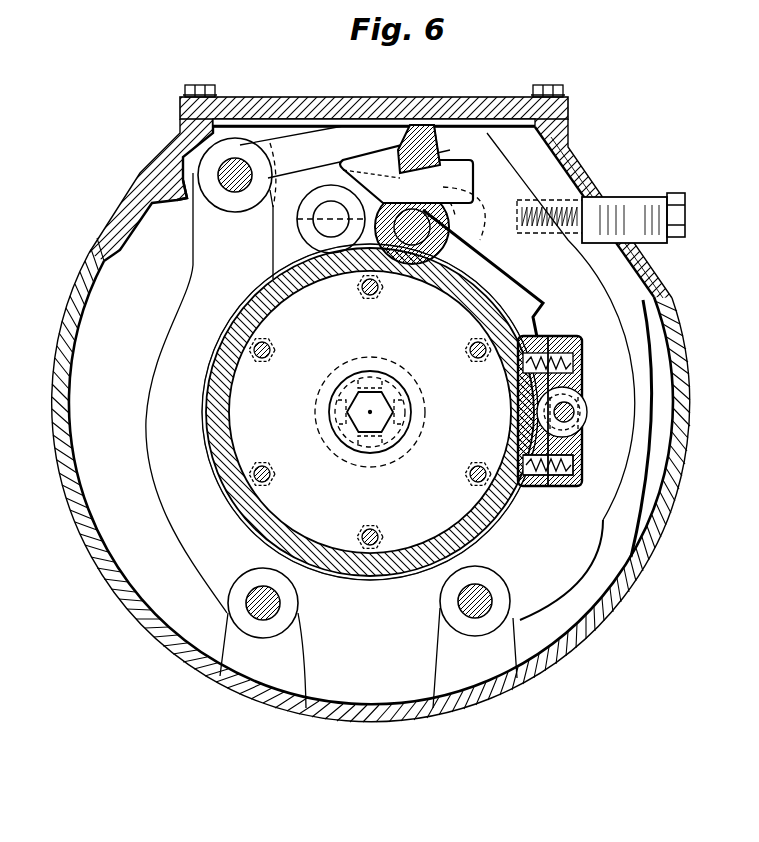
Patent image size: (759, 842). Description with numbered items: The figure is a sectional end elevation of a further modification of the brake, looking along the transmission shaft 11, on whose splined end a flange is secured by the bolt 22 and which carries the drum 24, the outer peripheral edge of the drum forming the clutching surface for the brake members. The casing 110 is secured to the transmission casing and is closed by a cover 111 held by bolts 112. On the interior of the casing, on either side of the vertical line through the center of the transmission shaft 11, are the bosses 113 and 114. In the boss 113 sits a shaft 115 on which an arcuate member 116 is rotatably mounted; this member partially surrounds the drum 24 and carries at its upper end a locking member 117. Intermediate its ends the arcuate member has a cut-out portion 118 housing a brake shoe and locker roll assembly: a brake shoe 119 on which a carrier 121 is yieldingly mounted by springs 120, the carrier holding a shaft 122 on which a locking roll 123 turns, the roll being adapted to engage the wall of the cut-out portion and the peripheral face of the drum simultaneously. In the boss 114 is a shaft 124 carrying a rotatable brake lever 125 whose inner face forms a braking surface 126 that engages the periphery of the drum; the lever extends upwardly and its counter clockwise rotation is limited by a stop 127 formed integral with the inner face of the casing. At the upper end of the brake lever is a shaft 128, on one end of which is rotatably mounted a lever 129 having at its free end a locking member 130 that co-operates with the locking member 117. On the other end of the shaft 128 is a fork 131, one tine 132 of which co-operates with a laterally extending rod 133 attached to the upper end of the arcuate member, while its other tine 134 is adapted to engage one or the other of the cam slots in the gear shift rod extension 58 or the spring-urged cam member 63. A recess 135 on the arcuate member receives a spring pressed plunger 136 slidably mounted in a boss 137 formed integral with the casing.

The transmission shaft 11 is at (345, 430).
The bolt 22 is at (374, 404).
The drum 24 is at (212, 438).
The extension 58 is at (326, 232).
The cam member 63 is at (437, 247).
The casing 110 is at (686, 372).
The cover 111 is at (363, 104).
The bolts 112 is at (205, 84).
The boss 113 is at (492, 667).
The boss 114 is at (237, 663).
The shaft 115 is at (465, 613).
The arcuate member 116 is at (592, 540).
The locking member 117 is at (437, 153).
The cut-out portion 118 is at (582, 345).
The brake shoe 119 is at (575, 450).
The springs 120 is at (572, 362).
The carrier 121 is at (580, 443).
The shaft 122 is at (575, 407).
The locking roll 123 is at (587, 414).
The shaft 124 is at (261, 620).
The brake lever 125 is at (180, 513).
The braking surface 126 is at (204, 408).
The stop 127 is at (177, 200).
The shaft 128 is at (237, 165).
The lever 129 is at (286, 193).
The locking member 130 is at (464, 173).
The fork 131 is at (304, 136).
The tine 132 is at (412, 127).
The rod 133 is at (436, 124).
The tine 134 is at (473, 209).
The recess 135 is at (557, 197).
The spring pressed plunger 136 is at (585, 196).
The boss 137 is at (652, 192).